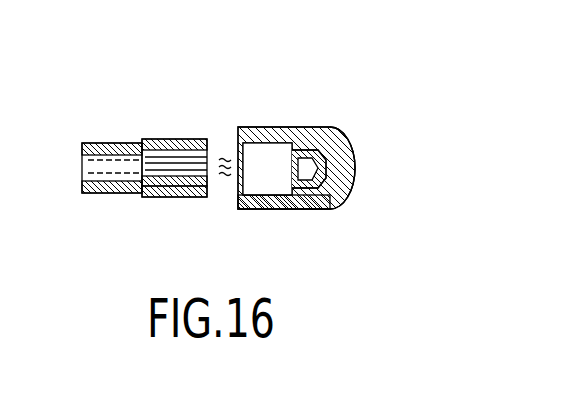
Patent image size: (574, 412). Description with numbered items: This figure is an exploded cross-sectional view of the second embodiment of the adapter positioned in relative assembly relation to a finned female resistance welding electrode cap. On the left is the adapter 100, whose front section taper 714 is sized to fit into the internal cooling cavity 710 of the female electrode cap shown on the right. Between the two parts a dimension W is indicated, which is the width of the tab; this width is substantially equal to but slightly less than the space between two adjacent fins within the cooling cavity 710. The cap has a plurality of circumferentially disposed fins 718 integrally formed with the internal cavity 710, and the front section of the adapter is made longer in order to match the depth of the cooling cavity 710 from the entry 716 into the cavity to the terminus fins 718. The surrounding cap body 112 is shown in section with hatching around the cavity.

The medical device / syringe connector 100 is at (156, 183).
The front section taper 714 is at (172, 137).
The width of the tab W is at (232, 155).
The cooling cavity 710 is at (302, 172).
The entry 716 is at (238, 197).
The fins 718 is at (347, 177).
The cap end wall 112 is at (337, 195).